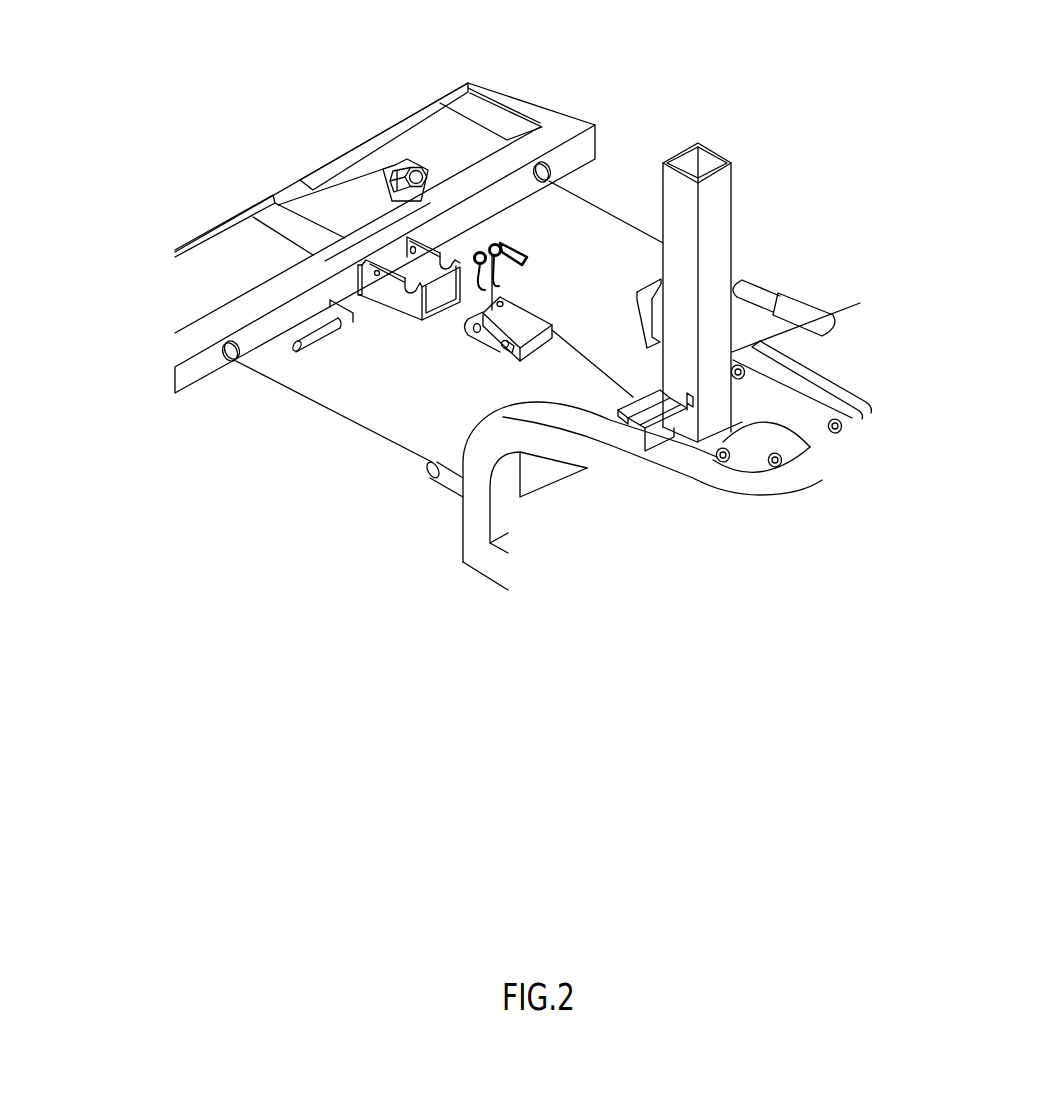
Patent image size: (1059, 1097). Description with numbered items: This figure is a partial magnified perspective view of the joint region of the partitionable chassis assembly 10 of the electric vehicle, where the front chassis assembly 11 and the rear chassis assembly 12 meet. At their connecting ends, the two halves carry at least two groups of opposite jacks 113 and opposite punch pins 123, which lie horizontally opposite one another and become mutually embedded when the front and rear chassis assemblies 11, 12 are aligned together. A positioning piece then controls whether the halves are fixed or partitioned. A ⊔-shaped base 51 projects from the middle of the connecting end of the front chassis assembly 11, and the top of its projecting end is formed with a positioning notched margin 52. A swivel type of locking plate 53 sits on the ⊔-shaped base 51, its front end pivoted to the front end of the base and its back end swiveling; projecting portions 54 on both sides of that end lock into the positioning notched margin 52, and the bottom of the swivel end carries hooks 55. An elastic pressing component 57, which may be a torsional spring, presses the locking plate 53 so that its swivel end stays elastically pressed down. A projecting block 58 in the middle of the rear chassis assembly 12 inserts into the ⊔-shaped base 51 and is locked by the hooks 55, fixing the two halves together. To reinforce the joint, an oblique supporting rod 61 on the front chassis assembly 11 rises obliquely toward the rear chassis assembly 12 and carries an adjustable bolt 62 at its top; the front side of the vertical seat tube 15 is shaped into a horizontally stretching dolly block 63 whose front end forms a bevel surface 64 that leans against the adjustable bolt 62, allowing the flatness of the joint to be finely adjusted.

The chassis assembly 10 is at (905, 176).
The front chassis assembly 11 is at (550, 118).
The rear chassis assembly 12 is at (835, 310).
The vertical seat tube 15 is at (718, 217).
The ⊔-shaped base 51 is at (390, 295).
The positioning notched margin 52 is at (408, 292).
The locking plate 53 is at (525, 305).
The lug 54 is at (500, 348).
The hooks 55 is at (505, 350).
The elastic pressing component 57 is at (515, 245).
The projecting block 58 is at (650, 403).
The oblique supporting rod 61 is at (330, 188).
The adjustable bolt 62 is at (409, 163).
The dolly block 63 is at (655, 292).
The bevel surface 64 is at (640, 320).
The jacks 113 is at (232, 362).
The punch pins 123 is at (443, 477).